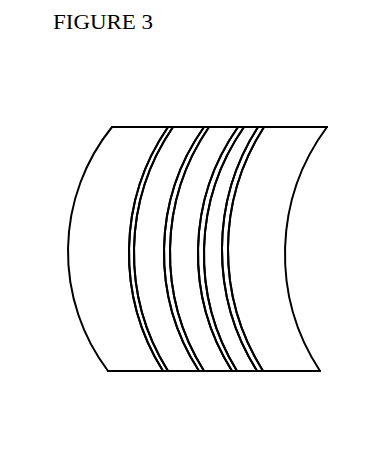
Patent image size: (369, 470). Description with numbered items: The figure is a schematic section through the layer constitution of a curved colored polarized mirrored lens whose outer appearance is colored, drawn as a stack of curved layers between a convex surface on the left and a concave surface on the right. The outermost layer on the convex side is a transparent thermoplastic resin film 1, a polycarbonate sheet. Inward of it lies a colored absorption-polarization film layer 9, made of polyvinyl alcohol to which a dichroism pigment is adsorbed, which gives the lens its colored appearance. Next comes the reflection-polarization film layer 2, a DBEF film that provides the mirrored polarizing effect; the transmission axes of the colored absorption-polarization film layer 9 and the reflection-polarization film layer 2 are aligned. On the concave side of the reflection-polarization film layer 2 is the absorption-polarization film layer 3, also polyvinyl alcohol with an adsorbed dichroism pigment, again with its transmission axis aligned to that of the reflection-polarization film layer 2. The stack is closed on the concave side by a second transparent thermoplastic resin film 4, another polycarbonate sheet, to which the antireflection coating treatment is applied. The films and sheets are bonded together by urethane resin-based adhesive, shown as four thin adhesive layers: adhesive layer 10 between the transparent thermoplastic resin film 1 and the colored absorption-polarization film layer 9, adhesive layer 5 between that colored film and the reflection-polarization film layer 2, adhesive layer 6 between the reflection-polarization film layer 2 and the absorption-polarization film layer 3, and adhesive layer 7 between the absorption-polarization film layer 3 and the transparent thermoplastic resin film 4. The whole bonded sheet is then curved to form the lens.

The transparent thermoplastic resin film 1 is at (137, 135).
The colored absorption-polarization film layer 9 is at (180, 135).
The reflection-polarization film layer 2 is at (216, 135).
The absorption-polarization film layer 3 is at (253, 135).
The transparent thermoplastic resin film 4 is at (284, 135).
The adhesive layer 10 is at (166, 371).
The adhesive layer 5 is at (202, 371).
The adhesive layer 6 is at (235, 371).
The adhesive layer 7 is at (262, 371).